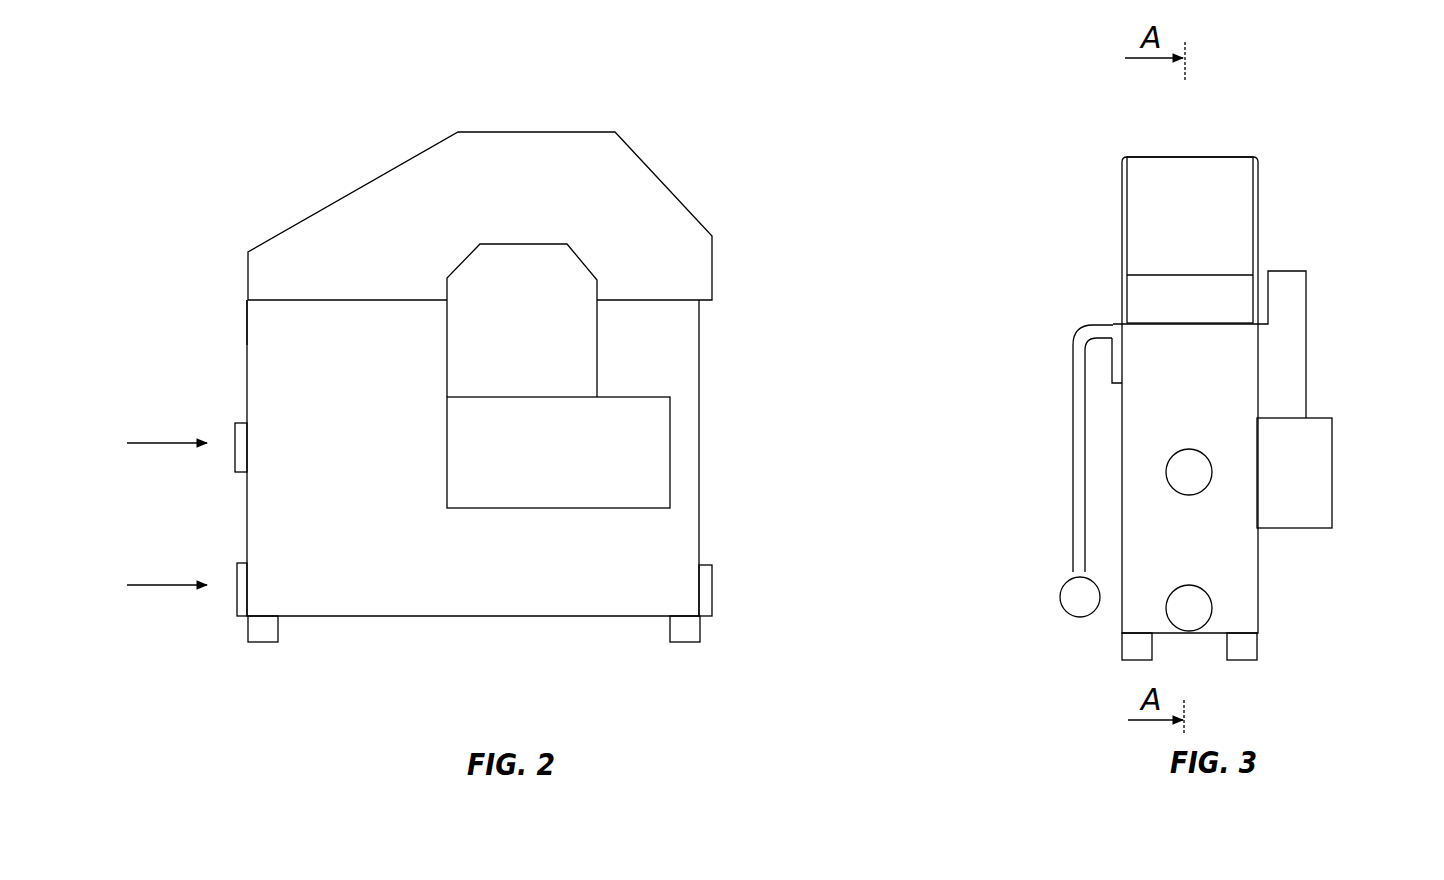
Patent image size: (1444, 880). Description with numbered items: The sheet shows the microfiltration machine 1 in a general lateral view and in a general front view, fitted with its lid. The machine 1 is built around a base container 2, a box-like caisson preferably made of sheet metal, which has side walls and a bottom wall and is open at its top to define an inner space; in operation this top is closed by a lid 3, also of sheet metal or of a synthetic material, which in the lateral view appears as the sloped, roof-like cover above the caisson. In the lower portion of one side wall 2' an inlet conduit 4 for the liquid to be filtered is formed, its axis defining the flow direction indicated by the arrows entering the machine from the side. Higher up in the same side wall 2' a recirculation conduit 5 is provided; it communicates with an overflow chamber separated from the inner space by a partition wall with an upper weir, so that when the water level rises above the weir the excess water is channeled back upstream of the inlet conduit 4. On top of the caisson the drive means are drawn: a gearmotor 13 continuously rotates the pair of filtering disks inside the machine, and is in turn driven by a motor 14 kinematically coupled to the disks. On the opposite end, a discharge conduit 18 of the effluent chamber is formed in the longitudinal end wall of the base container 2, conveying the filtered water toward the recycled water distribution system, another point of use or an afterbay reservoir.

In FIG. 2, the microfiltration machine 1 is at (797, 197).
In FIG. 2, the base container 2 is at (517, 471).
In FIG. 3, the base container 2 is at (1234, 408).
In FIG. 2, the side wall 2' is at (198, 327).
In FIG. 2, the lid 3 is at (652, 168).
In FIG. 3, the lid 3 is at (1172, 612).
In FIG. 2, the inlet conduit 4 is at (236, 597).
In FIG. 2, the recirculation conduit 5 is at (234, 458).
In FIG. 3, the recirculation conduit 5 is at (1165, 470).
In FIG. 2, the gearmotor 13 is at (447, 350).
In FIG. 3, the gearmotor 13 is at (1292, 328).
In FIG. 2, the motor 14 is at (607, 508).
In FIG. 3, the motor 14 is at (1318, 480).
In FIG. 2, the discharge conduit 18 is at (712, 585).